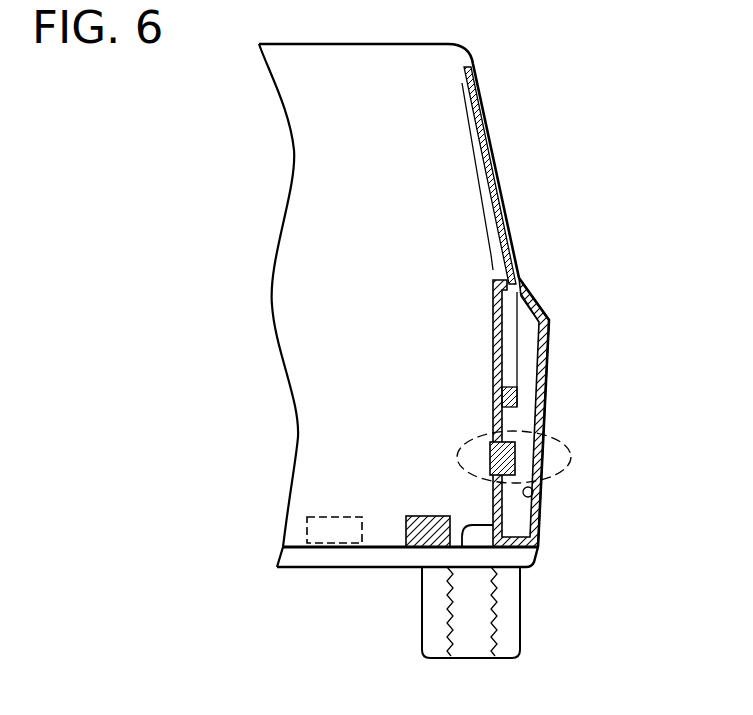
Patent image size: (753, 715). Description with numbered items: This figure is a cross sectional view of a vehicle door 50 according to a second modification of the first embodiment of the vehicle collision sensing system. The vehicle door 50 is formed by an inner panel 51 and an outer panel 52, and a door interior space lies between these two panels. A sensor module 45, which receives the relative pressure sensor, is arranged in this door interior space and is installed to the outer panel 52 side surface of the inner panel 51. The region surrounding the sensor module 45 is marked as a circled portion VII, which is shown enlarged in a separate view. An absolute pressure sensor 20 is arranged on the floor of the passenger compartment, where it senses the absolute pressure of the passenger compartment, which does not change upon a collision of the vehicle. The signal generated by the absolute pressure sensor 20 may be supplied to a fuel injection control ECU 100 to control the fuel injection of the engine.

The absolute pressure sensor 20 is at (418, 547).
The sensor module 45 is at (515, 461).
The vehicle door 50 is at (578, 307).
The inner panel 51 is at (493, 353).
The outer panel 52 is at (638, 307).
The fuel injection control ECU 100 is at (307, 530).
The circled portion VII is at (578, 452).